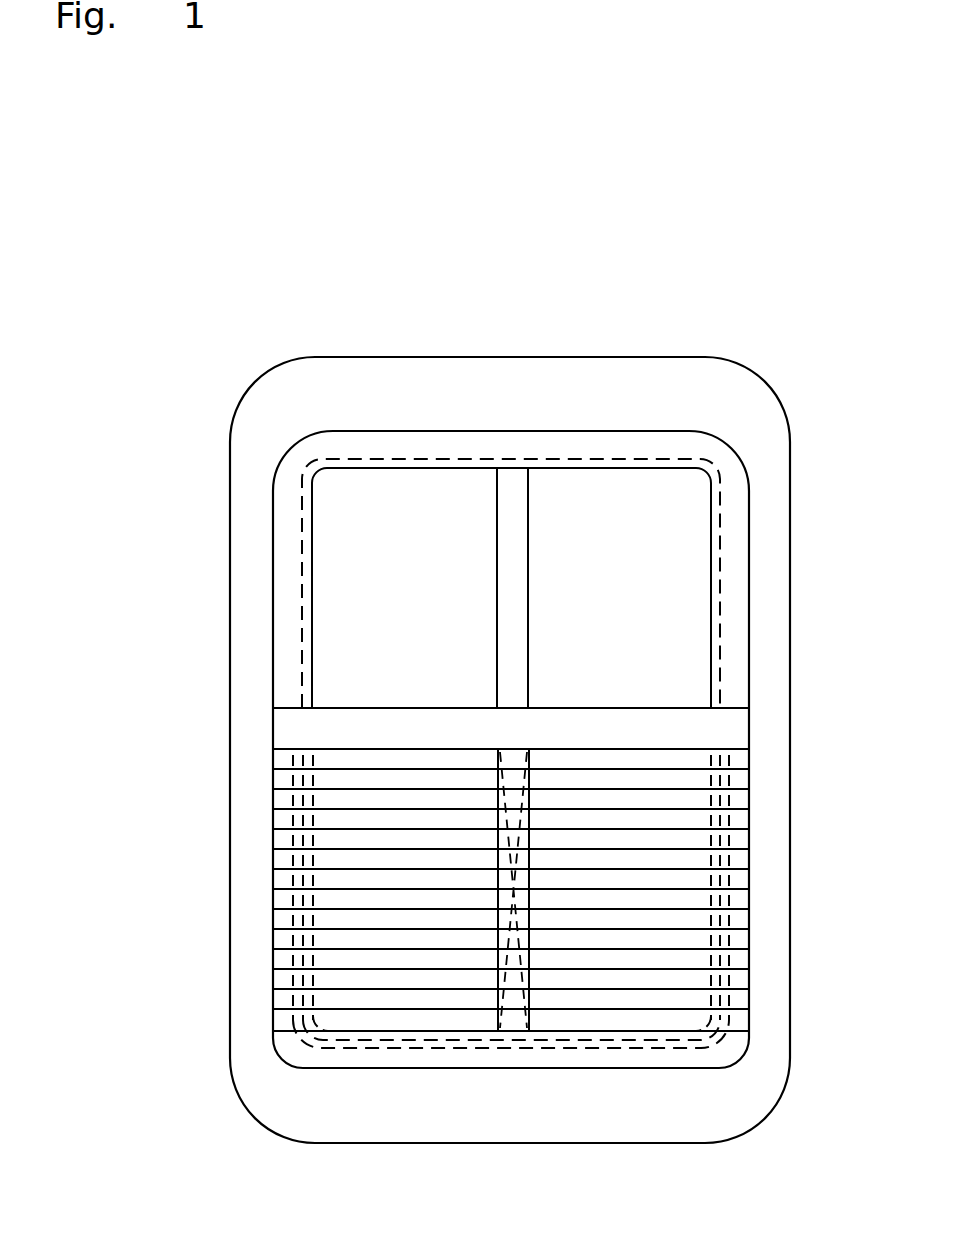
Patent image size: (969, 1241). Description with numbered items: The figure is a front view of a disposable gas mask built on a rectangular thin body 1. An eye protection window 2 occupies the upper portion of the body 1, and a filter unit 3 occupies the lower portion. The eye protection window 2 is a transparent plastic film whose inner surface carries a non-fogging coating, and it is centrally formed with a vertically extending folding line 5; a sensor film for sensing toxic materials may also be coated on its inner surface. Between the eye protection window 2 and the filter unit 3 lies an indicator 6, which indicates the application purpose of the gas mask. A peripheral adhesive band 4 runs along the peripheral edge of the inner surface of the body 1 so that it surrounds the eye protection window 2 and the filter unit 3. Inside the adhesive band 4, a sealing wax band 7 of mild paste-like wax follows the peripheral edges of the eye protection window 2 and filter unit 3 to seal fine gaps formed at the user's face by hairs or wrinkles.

The body 1 is at (230, 578).
The eye protection window 2 is at (363, 630).
The filter unit 3 is at (345, 870).
The peripheral adhesive band 4 is at (582, 400).
The folding line 5 is at (525, 533).
The indicator 6 is at (678, 725).
The sealing wax band 7 is at (675, 1037).